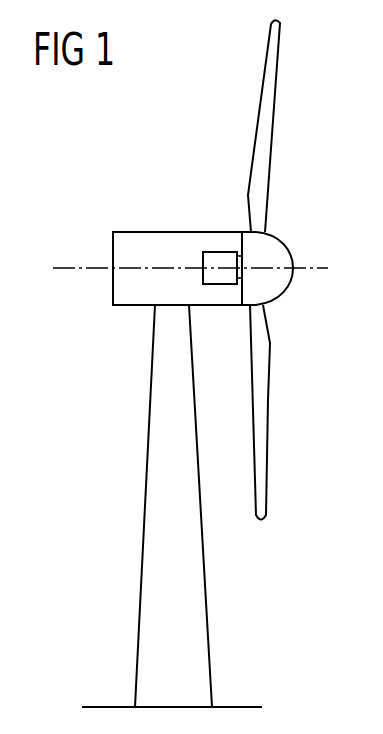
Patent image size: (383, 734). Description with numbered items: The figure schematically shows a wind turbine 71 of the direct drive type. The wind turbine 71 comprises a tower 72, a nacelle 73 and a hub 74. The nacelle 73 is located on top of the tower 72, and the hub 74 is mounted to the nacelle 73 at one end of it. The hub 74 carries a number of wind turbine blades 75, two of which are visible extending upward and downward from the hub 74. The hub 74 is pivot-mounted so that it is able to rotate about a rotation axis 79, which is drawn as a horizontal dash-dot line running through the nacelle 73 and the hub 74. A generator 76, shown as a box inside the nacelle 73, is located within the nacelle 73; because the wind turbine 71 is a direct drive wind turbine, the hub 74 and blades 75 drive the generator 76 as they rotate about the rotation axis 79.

The wind turbine 71 is at (93, 428).
The tower 72 is at (192, 574).
The nacelle 73 is at (141, 232).
The hub 74 is at (292, 250).
The wind turbine blades 75 is at (263, 120).
The generator 76 is at (219, 258).
The rotation axis 79 is at (63, 266).